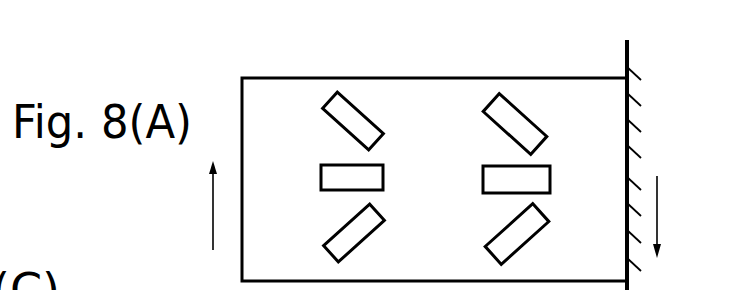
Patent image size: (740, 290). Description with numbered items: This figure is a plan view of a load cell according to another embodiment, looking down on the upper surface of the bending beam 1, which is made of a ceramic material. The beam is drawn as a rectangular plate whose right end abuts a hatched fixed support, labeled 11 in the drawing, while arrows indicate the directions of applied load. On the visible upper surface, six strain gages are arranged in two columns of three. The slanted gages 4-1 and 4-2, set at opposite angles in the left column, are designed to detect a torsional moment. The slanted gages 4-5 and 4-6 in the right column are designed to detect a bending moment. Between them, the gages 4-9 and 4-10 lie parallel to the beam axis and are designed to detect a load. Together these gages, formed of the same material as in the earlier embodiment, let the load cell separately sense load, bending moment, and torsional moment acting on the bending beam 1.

The bending beam 1 is at (554, 74).
The fixed wall 11 is at (635, 169).
The strain gage 4-1 is at (325, 121).
The strain gage 4-2 is at (326, 233).
The strain gage 4-5 is at (484, 124).
The strain gage 4-6 is at (485, 234).
The strain gage 4-9 is at (325, 178).
The strain gage 4-10 is at (486, 179).